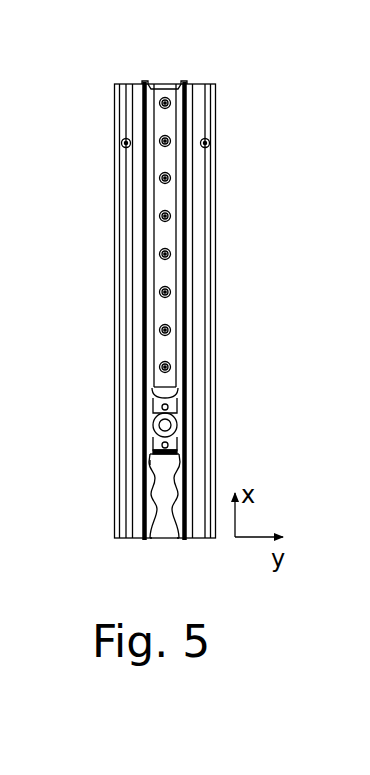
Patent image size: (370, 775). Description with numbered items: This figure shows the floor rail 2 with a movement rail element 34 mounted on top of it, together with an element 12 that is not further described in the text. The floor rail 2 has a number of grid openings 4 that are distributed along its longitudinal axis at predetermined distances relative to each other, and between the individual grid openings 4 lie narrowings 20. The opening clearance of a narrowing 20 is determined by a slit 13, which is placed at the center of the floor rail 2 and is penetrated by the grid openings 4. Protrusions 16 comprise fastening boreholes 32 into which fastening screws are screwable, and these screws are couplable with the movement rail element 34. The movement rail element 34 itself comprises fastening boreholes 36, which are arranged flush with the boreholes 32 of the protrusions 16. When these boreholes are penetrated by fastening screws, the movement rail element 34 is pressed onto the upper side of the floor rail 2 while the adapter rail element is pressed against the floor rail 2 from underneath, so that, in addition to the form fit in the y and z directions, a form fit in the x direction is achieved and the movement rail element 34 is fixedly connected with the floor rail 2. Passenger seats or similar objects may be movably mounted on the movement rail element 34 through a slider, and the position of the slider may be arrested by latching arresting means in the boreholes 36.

The floor rail 2 is at (222, 185).
The grid openings 4 is at (162, 497).
The end cap 12 is at (163, 86).
The slit 13 is at (167, 516).
The protrusions 16 is at (178, 447).
The narrowings 20 is at (158, 481).
The fastening boreholes 32 is at (175, 423).
The movement rail element 34 is at (167, 276).
The fastening boreholes 36 is at (171, 217).